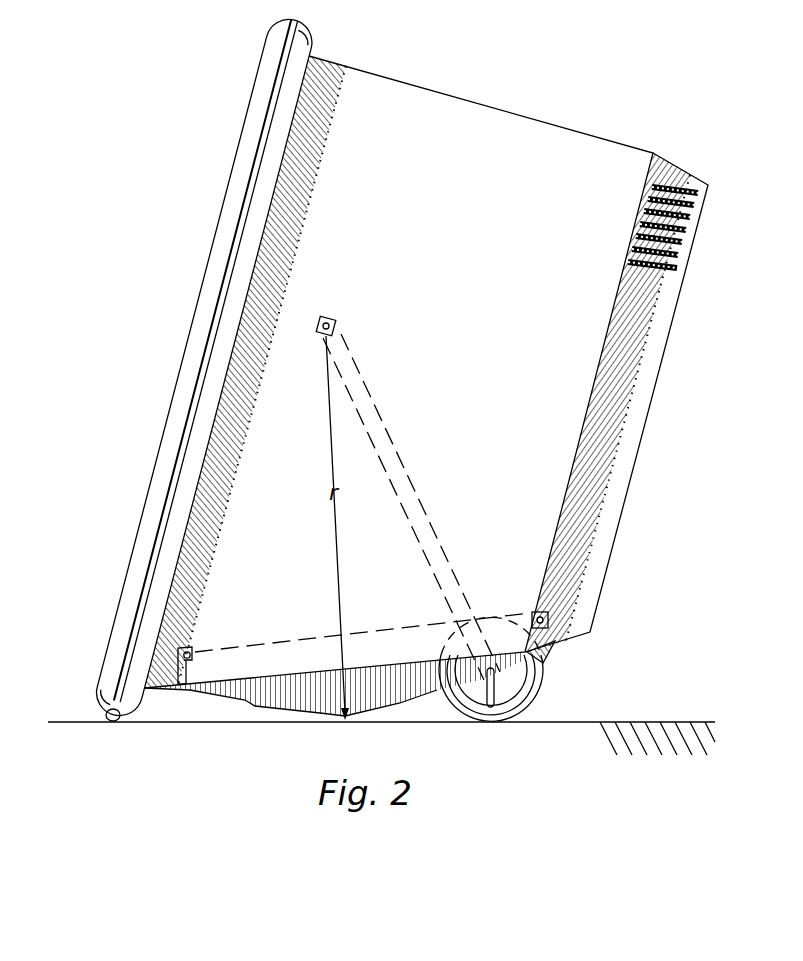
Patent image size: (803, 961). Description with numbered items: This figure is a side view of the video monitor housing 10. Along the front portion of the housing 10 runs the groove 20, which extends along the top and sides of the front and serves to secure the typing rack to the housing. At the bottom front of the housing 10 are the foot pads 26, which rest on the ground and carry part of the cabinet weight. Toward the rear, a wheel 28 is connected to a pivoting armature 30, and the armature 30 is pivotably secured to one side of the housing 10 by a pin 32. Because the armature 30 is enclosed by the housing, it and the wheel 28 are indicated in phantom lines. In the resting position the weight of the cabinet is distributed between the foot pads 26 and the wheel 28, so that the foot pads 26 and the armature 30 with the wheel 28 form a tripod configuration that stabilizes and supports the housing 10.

The video monitor housing 10 is at (522, 242).
The grooves 20 is at (283, 68).
The foot pads 26 is at (108, 712).
The wheel 28 is at (540, 694).
The pivoting armature 30 is at (383, 418).
The pin 32 is at (337, 324).